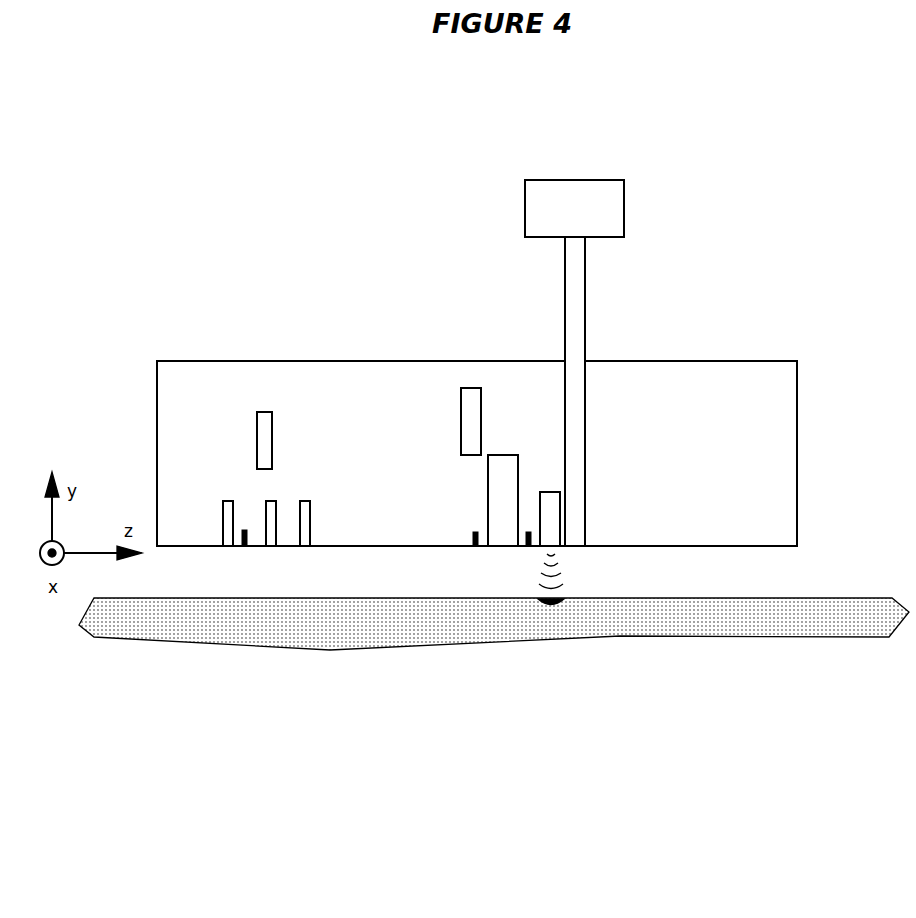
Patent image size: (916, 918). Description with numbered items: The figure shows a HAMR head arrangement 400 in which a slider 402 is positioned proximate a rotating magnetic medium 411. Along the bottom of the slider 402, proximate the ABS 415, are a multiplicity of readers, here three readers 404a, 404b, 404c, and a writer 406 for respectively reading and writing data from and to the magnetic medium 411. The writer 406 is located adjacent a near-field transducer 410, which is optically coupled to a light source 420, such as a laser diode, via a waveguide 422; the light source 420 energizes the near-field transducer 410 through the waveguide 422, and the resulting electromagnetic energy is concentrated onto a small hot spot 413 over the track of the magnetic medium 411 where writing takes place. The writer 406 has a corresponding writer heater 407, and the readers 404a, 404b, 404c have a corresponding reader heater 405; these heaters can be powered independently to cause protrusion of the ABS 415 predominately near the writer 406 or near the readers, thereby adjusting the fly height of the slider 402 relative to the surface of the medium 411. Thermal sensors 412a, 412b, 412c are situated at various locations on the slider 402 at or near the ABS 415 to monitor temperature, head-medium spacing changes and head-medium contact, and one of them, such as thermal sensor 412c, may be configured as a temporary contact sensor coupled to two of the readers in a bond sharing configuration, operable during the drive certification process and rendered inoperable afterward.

The HAMR head arrangement 400 is at (270, 218).
The slider 402 is at (826, 337).
The reader 404a is at (223, 517).
The reader 404b is at (268, 500).
The reader 404c is at (310, 511).
The reader heater 405 is at (272, 440).
The writer 406 is at (488, 510).
The writer heater 407 is at (461, 430).
The near-field transducer 410 is at (550, 491).
The magnetic medium 411 is at (850, 598).
The thermal sensor 412a is at (528, 547).
The thermal sensor 412b is at (244, 547).
The thermal sensor (temporary contact sensor) 412c is at (475, 547).
The hot spot 413 is at (549, 604).
The ABS 415 is at (697, 547).
The light source 420 is at (624, 203).
The waveguide 422 is at (585, 303).